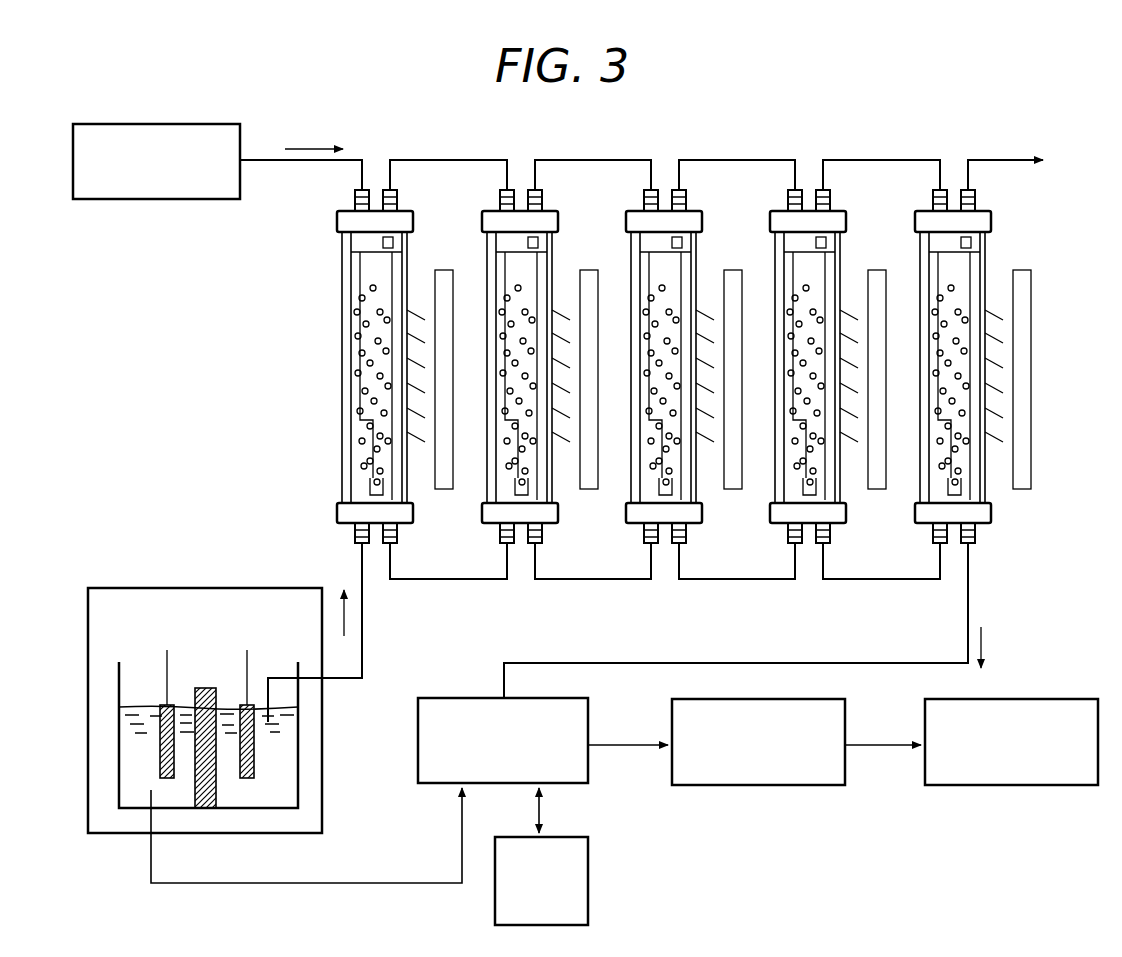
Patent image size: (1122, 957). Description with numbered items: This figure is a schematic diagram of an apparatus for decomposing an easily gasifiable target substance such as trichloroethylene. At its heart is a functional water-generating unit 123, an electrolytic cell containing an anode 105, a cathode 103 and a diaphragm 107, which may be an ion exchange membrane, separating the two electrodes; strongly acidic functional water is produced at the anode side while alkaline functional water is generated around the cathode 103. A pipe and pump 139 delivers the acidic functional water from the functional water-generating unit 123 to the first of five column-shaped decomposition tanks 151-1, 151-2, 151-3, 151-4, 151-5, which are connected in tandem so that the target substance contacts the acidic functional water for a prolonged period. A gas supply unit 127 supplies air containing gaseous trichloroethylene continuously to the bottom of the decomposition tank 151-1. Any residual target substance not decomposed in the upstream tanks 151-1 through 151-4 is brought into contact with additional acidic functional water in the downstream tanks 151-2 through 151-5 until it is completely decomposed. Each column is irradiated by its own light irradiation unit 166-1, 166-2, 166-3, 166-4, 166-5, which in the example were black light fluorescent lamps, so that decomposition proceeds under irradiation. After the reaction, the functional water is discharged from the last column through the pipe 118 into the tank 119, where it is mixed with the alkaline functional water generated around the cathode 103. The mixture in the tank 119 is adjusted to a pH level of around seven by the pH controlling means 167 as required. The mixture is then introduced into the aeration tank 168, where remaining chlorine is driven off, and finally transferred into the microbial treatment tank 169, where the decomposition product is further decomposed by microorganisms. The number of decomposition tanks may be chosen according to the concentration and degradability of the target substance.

The gas supply unit 127 is at (156, 161).
The decomposition tank 151-1 is at (350, 470).
The decomposition tank 151-2 is at (485, 492).
The decomposition tank 151-3 is at (629, 492).
The decomposition tank 151-4 is at (773, 492).
The decomposition tank 151-5 is at (918, 492).
The light irradiation unit 166-1 is at (441, 270).
The light irradiation unit 166-2 is at (586, 270).
The light irradiation unit 166-3 is at (730, 270).
The light irradiation unit 166-4 is at (874, 270).
The light irradiation unit 166-5 is at (1019, 270).
The functional water-generating unit 123 is at (177, 588).
The cathode 103 is at (135, 742).
The anode 105 is at (255, 740).
The diaphragm 107 is at (205, 810).
The pipe and pump 139 is at (364, 638).
The pipe 118 is at (773, 663).
The tank 119 is at (503, 740).
The pH controlling means 167 is at (541, 881).
The aeration tank 168 is at (758, 742).
The microbial treatment tank 169 is at (1011, 742).